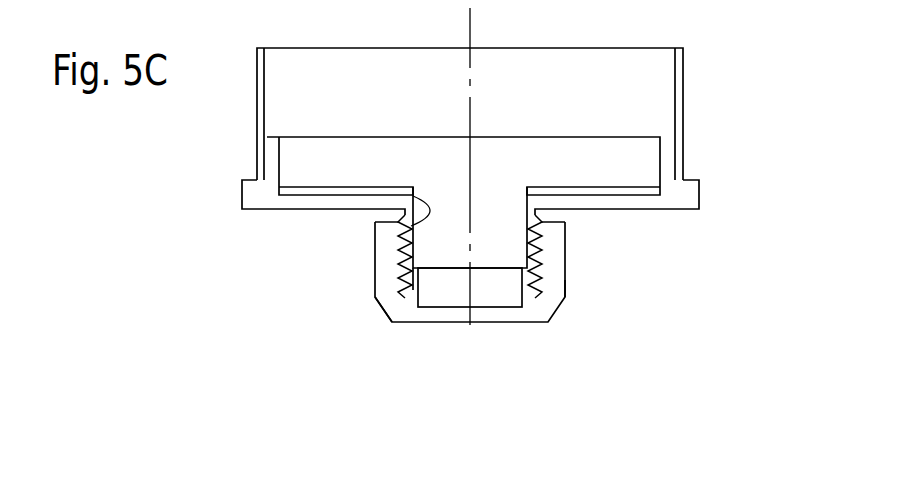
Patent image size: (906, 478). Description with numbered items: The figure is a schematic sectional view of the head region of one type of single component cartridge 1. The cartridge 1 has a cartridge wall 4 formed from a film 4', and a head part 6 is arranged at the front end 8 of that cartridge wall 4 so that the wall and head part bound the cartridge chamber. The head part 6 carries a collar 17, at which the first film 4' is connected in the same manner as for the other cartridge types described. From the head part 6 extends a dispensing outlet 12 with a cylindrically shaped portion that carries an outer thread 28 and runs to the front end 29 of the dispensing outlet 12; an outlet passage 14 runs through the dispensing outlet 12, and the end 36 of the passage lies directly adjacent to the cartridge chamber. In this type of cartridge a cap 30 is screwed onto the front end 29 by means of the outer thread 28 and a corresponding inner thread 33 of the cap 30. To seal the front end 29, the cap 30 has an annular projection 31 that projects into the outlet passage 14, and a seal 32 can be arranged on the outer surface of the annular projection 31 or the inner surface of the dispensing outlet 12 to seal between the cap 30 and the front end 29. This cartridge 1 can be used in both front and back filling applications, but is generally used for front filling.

The cartridge 1 is at (210, 318).
The cartridge wall 4 is at (522, 119).
The film 4' is at (522, 119).
The front end 8 is at (683, 167).
The head part 6 is at (683, 203).
The collar 17 is at (667, 153).
The end 36 is at (417, 221).
The cap 30 is at (470, 293).
The outer thread 28 is at (516, 256).
The inner thread 33 is at (535, 243).
The seal 32 is at (534, 294).
The front end 29 is at (392, 323).
The annular projection 31 is at (415, 288).
The dispensing outlet 12 is at (471, 333).
The outlet passage 14 is at (495, 293).